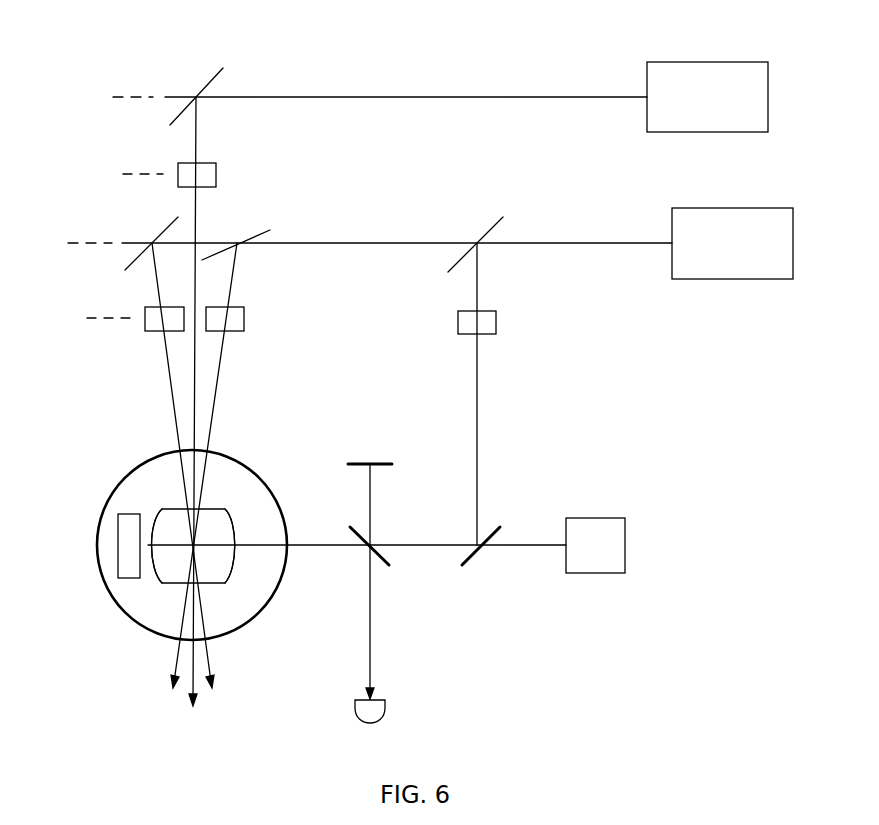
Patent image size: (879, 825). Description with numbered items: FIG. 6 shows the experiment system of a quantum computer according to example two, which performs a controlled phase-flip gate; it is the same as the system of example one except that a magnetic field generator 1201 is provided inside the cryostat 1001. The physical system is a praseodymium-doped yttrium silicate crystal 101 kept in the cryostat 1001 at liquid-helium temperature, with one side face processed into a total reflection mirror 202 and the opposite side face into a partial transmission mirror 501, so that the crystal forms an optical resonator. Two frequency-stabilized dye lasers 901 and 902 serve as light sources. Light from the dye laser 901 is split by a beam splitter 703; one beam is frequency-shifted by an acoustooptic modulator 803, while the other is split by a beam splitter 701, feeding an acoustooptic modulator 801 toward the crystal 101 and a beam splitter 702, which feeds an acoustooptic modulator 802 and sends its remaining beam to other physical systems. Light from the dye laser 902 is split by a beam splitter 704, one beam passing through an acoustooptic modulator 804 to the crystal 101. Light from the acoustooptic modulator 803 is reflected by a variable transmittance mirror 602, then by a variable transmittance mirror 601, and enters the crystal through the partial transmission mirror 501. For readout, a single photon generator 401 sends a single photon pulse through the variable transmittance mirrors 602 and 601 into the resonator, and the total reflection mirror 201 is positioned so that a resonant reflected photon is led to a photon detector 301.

The crystal 101 is at (170, 590).
The total reflection mirror 201 is at (378, 462).
The total reflection mirror 202 is at (155, 518).
The photon detector 301 is at (386, 709).
The single photon generator 401 is at (626, 545).
The partial transmission mirror 501 is at (228, 518).
The variable transmittance mirror 601 is at (352, 525).
The variable transmittance mirror 602 is at (500, 525).
The beam splitter 701 is at (255, 228).
The beam splitter 702 is at (170, 220).
The beam splitter 703 is at (488, 227).
The beam splitter 704 is at (206, 66).
The acoustooptic modulator 801 is at (245, 317).
The acoustooptic modulator 802 is at (157, 332).
The acoustooptic modulator 803 is at (497, 321).
The acoustooptic modulator 804 is at (217, 173).
The dye laser 901 is at (732, 280).
The dye laser 902 is at (705, 62).
The cryostat 1001 is at (227, 635).
The magnetic field generator 1201 is at (128, 578).